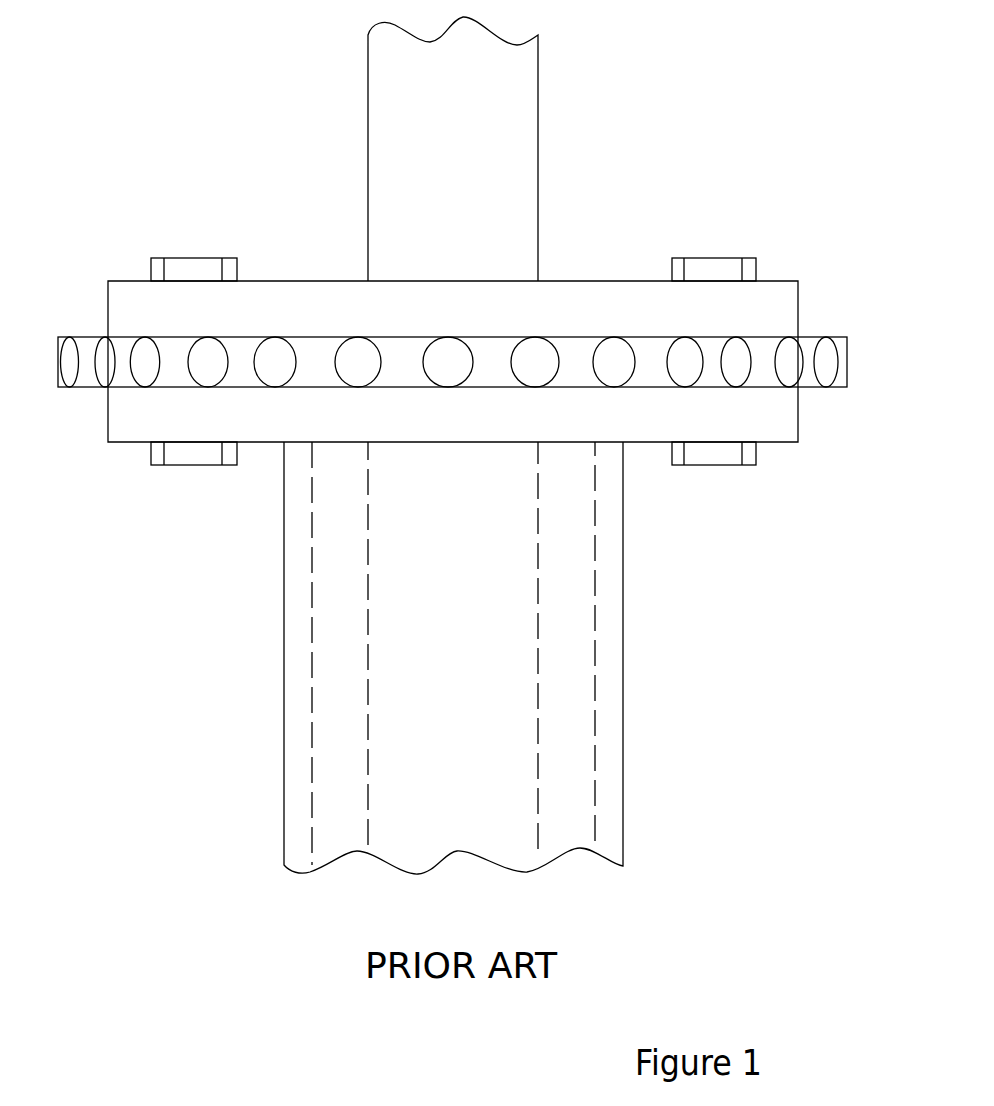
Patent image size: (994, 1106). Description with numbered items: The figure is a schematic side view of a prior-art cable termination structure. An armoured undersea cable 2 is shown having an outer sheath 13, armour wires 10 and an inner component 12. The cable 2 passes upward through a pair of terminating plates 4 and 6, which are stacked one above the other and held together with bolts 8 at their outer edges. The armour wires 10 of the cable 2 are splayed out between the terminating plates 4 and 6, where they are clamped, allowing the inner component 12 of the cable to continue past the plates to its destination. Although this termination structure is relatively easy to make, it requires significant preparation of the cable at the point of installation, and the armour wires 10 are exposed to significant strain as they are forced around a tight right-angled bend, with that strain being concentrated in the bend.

The armoured undersea cable 2 is at (548, 652).
The terminating plate 4 is at (567, 413).
The terminating plate 6 is at (567, 300).
The bolts 8 is at (735, 258).
The armour wires 10 is at (752, 367).
The inner component 12 is at (510, 75).
The outer sheath 13 is at (612, 588).